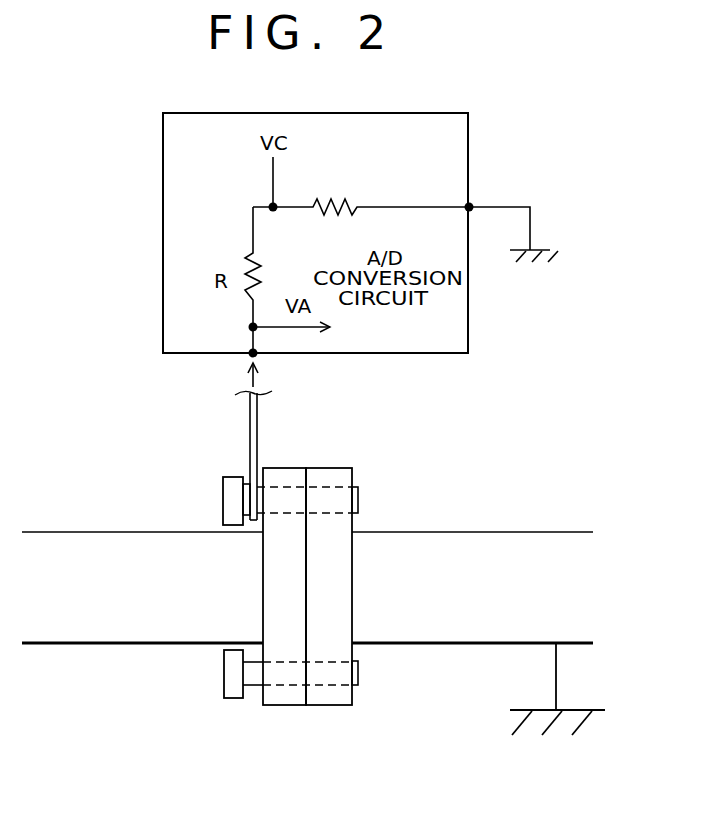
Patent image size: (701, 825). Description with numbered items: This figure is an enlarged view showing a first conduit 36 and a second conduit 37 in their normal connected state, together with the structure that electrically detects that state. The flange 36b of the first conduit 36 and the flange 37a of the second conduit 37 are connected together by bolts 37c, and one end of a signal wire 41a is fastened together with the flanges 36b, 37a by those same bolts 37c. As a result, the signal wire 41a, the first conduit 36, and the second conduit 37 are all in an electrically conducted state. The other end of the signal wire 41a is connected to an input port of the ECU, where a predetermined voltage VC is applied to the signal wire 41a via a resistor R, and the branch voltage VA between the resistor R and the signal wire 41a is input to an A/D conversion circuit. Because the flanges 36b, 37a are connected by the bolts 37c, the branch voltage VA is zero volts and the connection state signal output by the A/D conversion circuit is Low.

The signal wire 41a is at (257, 428).
The bolts 37c is at (223, 497).
The first conduit 36 is at (80, 644).
The second conduit 37 is at (475, 644).
The flange 36b is at (280, 706).
The flange 37a is at (332, 706).